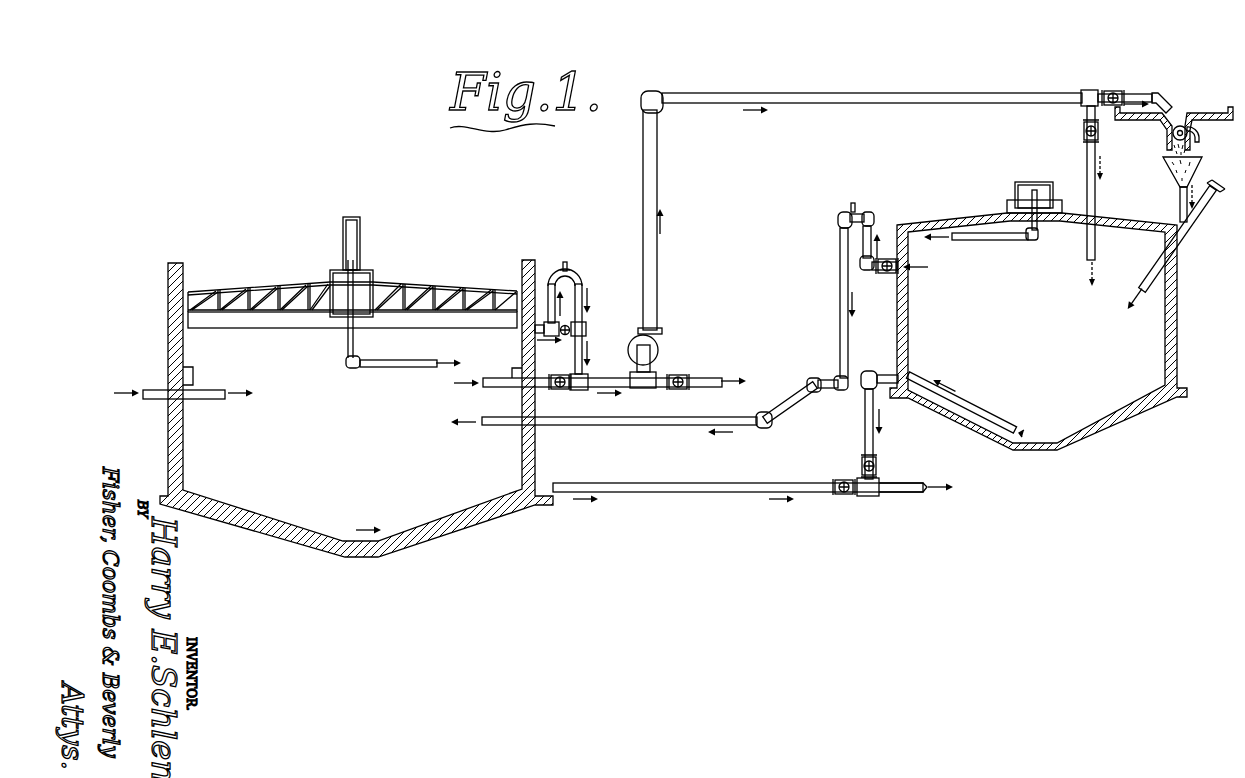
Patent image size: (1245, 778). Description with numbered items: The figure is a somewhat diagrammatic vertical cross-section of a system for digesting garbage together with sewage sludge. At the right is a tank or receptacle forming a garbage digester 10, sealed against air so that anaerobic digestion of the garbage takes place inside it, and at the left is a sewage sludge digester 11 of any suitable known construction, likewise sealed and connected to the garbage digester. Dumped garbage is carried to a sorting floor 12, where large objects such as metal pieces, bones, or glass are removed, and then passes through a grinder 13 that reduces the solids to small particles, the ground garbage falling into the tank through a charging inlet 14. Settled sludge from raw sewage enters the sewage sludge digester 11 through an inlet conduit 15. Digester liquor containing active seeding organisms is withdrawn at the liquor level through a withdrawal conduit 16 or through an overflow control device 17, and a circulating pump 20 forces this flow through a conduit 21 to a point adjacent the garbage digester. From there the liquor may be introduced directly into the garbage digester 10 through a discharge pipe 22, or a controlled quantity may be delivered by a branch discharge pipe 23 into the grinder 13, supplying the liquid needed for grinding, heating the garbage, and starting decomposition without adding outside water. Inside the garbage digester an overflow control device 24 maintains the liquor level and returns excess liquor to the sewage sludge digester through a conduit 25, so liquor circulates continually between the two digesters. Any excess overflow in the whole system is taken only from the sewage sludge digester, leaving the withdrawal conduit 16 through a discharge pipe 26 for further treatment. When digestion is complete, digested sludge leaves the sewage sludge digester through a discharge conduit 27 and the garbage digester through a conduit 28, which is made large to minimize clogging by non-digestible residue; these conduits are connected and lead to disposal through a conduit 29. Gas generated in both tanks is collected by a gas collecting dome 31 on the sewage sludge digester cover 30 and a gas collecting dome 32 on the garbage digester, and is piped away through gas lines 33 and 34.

The garbage digester 10 is at (1177, 302).
The sewage sludge digester 11 is at (175, 436).
The sorting floor 12 is at (1203, 108).
The grinder 13 is at (1190, 145).
The charging inlet 14 is at (1173, 175).
The inlet conduit 15 is at (158, 393).
The withdrawal conduit 16 is at (542, 383).
The overflow control device 17 is at (583, 291).
The circulating pump 20 is at (653, 353).
The conduit 21 is at (650, 270).
The discharge pipe 22 is at (1088, 148).
The branch discharge pipe 23 is at (1133, 93).
The overflow control device 24 is at (870, 217).
The conduit 25 is at (840, 300).
The discharge pipe 26 is at (697, 380).
The discharge conduit 27 is at (642, 492).
The conduit 28 is at (873, 443).
The conduit 29 is at (908, 492).
The sewage sludge digester cover 30 is at (445, 293).
The gas collecting dome 31 is at (363, 280).
The gas collecting dome 32 is at (1020, 182).
The gas line 33 is at (407, 367).
The gas line 34 is at (978, 242).